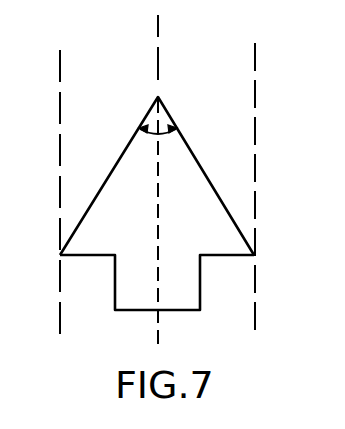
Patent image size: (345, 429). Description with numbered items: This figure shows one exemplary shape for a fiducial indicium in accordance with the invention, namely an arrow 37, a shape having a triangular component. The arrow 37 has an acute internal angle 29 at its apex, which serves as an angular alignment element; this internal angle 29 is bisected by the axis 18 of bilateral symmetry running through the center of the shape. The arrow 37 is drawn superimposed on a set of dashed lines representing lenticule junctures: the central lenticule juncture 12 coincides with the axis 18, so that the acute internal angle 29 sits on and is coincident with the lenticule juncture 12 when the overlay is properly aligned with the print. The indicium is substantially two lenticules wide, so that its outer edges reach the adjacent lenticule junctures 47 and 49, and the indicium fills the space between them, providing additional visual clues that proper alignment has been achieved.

The lenticule juncture 49 is at (61, 70).
The lenticule juncture 12 is at (159, 68).
The lenticule juncture 47 is at (256, 63).
The arrow 37 is at (212, 200).
The axis 18 is at (160, 240).
The internal angle 29 is at (186, 129).